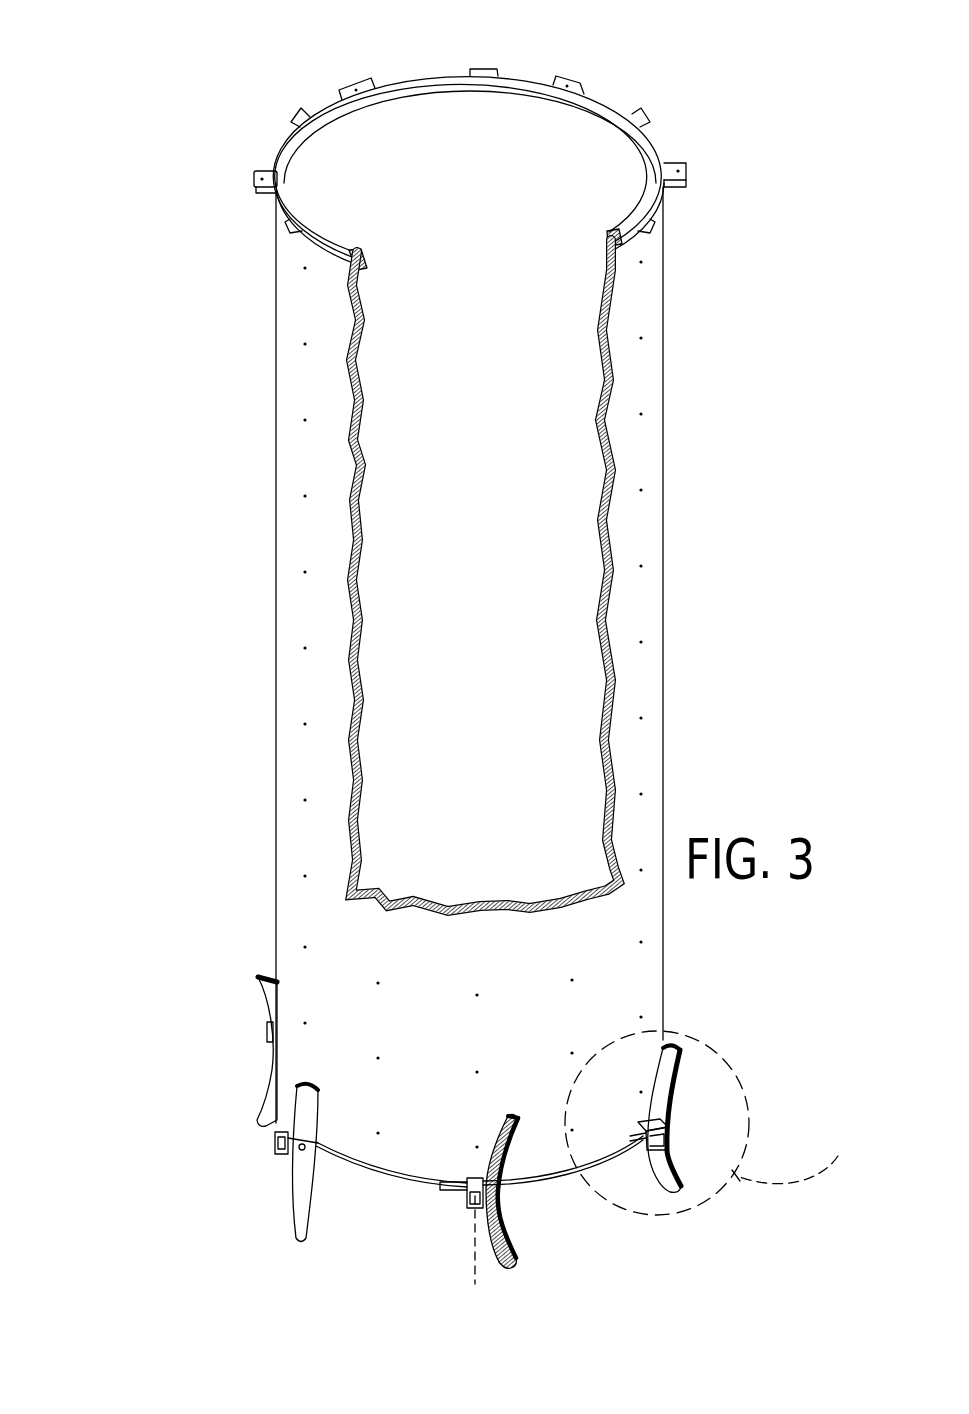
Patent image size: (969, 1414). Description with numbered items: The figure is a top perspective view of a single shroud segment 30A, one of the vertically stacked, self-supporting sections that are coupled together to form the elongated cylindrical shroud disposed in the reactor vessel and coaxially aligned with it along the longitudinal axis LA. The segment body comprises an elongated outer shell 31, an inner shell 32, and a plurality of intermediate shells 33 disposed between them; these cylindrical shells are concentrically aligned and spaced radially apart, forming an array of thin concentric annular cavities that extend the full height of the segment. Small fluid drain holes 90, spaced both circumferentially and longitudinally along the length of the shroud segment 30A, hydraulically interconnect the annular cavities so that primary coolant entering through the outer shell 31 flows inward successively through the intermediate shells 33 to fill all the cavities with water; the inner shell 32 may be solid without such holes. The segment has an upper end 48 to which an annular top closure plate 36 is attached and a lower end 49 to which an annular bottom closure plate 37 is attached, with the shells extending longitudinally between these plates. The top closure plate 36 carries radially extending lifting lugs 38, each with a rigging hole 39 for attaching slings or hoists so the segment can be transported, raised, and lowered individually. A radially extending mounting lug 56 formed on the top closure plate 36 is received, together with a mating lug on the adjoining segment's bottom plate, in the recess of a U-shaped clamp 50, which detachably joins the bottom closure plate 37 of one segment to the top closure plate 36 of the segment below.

The shroud segment 30A is at (198, 197).
The outer shell 31 is at (650, 442).
The inner shell 32 is at (485, 575).
The intermediate shells 33 is at (620, 365).
The top closure plate 36 is at (605, 99).
The bottom closure plate 37 is at (410, 1176).
The lifting lugs 38 is at (684, 165).
The rigging hole 39 is at (684, 186).
The upper end 48 is at (413, 60).
The lower end 49 is at (362, 1196).
The clamps 50 is at (710, 1127).
The mounting lug 56 is at (652, 126).
The drain holes 90 is at (303, 420).
The longitudinal axis LA is at (470, 1266).